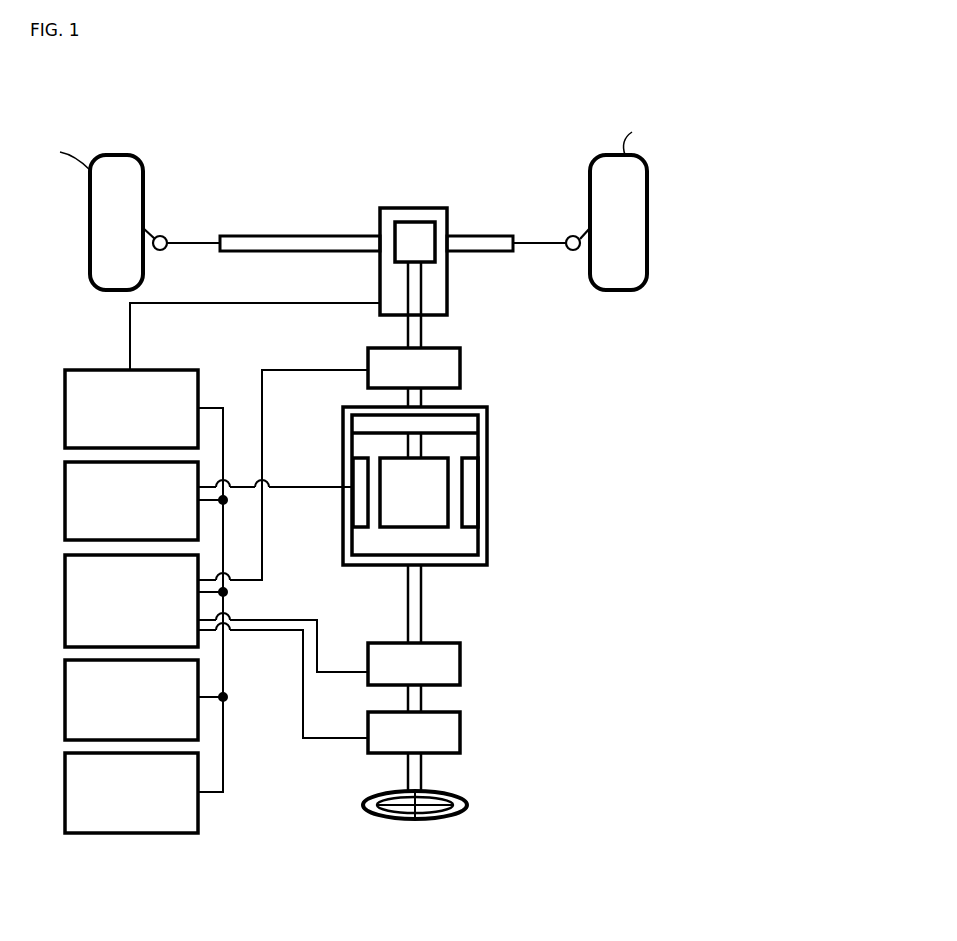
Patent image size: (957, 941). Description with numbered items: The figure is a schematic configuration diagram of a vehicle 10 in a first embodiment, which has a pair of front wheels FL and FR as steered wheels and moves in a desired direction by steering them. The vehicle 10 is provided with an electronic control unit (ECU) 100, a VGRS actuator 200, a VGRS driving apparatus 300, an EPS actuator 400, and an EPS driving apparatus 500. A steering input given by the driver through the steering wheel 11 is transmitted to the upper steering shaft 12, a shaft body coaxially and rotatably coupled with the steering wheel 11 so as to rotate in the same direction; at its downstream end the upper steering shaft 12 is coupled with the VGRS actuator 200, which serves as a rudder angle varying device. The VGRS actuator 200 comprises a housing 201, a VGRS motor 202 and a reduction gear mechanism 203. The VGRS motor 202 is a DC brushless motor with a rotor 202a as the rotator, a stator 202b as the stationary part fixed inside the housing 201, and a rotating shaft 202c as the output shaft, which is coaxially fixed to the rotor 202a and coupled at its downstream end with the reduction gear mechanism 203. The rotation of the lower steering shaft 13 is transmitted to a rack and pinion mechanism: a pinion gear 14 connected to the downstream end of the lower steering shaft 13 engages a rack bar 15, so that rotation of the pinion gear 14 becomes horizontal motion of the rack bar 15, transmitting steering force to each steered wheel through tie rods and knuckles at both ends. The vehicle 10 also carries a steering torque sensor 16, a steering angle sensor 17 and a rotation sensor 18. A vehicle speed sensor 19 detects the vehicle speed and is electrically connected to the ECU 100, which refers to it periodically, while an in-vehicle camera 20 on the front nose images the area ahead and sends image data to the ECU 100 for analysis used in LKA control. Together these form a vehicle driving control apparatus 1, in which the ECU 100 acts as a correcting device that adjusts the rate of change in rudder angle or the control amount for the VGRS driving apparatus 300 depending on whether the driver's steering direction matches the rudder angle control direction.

The vehicle driving control apparatus 1 is at (249, 852).
The vehicle 10 is at (580, 80).
The steering wheel 11 is at (365, 813).
The upper steering shaft 12 is at (418, 778).
The lower steering shaft 13 is at (415, 330).
The pinion gear 14 is at (412, 222).
The rack bar 15 is at (252, 237).
The steering torque sensor 16 is at (460, 735).
The steering angle sensor 17 is at (460, 672).
The rotation sensor 18 is at (368, 352).
The vehicle speed sensor 19 is at (62, 661).
The in-vehicle camera 20 is at (62, 754).
The electronic control unit (ECU) 100 is at (62, 556).
The VGRS actuator 200 is at (523, 540).
The housing 201 is at (490, 540).
The VGRS motor 202 is at (507, 488).
The rotor 202a is at (420, 475).
The stator 202b is at (470, 495).
The rotating shaft 202c is at (415, 445).
The reduction gear mechanism 203 is at (470, 425).
The VGRS driving apparatus 300 is at (62, 464).
The EPS actuator 400 is at (447, 290).
The EPS driving apparatus 500 is at (62, 372).